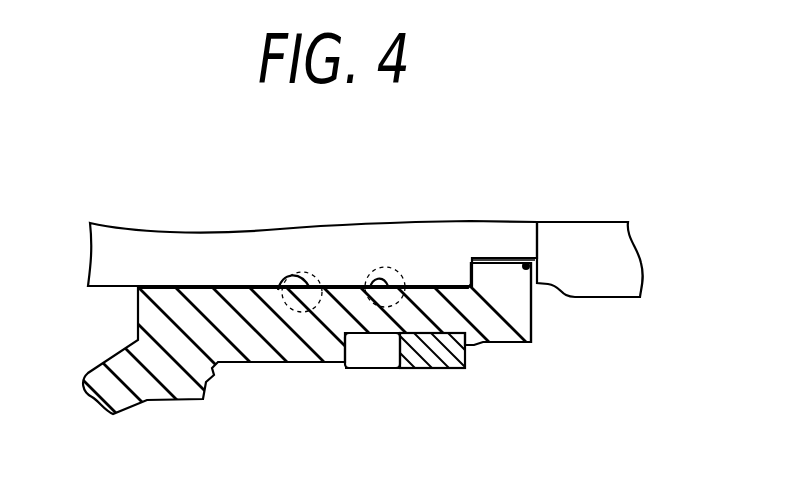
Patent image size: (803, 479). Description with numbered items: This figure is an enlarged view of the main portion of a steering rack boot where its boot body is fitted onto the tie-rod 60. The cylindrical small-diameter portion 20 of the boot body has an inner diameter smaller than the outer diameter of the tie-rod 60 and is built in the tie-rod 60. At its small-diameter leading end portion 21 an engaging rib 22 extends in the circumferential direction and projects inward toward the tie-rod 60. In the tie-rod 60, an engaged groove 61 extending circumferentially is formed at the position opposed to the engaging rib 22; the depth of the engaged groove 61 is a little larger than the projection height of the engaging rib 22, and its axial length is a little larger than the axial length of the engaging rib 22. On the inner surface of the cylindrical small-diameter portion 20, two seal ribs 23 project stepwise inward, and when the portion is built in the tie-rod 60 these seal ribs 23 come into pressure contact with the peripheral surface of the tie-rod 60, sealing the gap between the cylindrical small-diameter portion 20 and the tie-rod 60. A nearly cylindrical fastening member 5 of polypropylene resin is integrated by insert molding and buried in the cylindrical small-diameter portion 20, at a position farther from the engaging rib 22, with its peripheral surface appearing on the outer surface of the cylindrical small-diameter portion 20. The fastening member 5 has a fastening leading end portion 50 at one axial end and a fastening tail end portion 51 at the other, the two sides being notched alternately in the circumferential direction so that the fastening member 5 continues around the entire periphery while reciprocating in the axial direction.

The tie-rod 60 is at (233, 250).
The cylindrical small-diameter portion 20 is at (298, 345).
The small-diameter leading end portion 21 is at (528, 315).
The engaging rib 22 is at (503, 272).
The seal rib 23 is at (386, 287).
The engaged groove 61 is at (523, 263).
The fastening leading end portion 50 is at (463, 366).
The fastening tail end portion 51 is at (347, 369).
The fastening member 5 is at (437, 369).